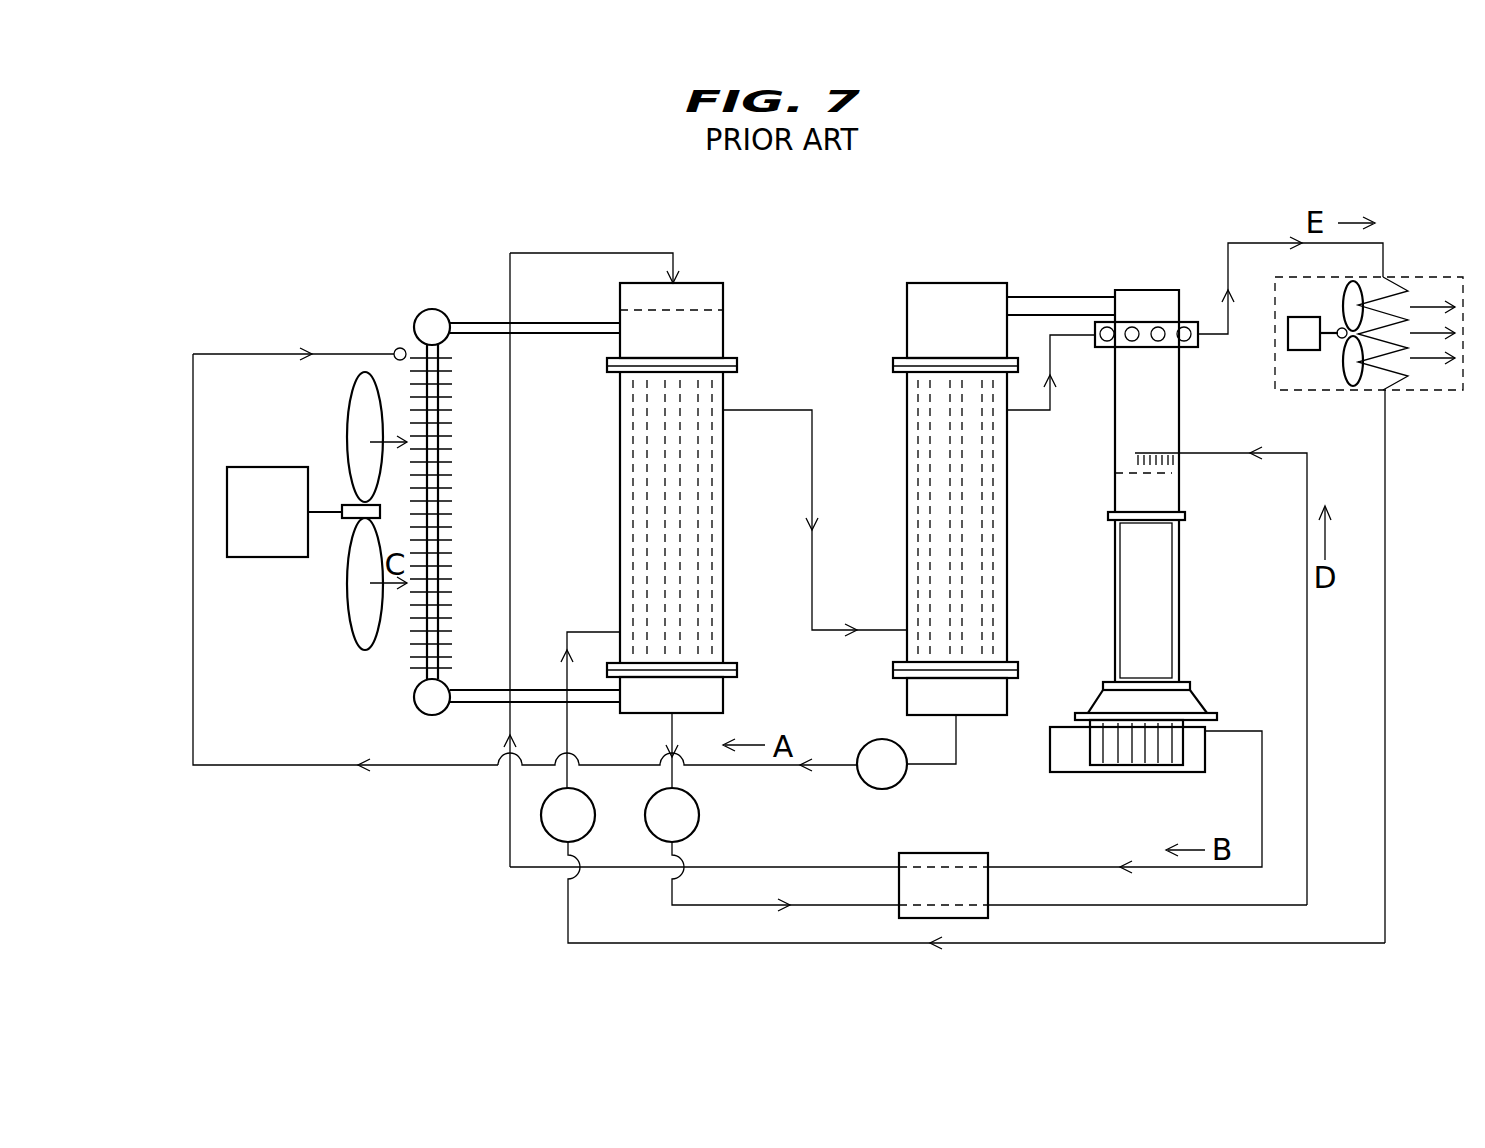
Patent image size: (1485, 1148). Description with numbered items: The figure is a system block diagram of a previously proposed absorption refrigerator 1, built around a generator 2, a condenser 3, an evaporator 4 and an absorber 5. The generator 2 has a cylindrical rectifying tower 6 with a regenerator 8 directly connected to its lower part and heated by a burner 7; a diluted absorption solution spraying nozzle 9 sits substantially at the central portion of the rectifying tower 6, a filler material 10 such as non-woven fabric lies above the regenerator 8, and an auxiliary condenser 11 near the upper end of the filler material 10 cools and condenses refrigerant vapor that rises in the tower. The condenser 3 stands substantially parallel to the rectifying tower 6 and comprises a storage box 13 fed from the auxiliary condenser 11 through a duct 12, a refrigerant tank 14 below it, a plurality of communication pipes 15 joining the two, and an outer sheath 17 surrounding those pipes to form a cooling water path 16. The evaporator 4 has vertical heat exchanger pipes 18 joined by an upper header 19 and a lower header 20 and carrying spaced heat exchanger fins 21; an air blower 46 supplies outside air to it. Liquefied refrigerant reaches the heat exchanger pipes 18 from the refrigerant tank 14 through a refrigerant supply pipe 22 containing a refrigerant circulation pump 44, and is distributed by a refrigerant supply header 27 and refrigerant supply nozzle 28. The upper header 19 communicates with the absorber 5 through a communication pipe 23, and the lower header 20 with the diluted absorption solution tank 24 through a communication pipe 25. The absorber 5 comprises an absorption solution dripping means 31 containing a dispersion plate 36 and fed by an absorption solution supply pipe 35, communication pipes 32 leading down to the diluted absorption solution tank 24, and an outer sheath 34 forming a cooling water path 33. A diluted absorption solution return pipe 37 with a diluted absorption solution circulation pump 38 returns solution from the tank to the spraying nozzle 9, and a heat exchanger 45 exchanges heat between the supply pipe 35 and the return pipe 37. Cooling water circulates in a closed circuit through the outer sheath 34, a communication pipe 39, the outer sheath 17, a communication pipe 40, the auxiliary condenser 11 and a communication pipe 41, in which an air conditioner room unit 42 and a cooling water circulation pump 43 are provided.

The absorption refrigerator 1 is at (1078, 283).
The generator 2 is at (1178, 676).
The condenser 3 is at (953, 459).
The evaporator 4 is at (441, 311).
The absorber 5 is at (670, 439).
The rectifying tower 6 is at (1180, 418).
The burner 7 is at (1075, 772).
The regenerator 8 is at (1165, 765).
The diluted absorption solution spraying nozzle 9 is at (1147, 402).
The filler material 10 is at (1160, 610).
The auxiliary condenser 11 is at (1200, 348).
The duct 12 is at (1042, 297).
The storage box 13 is at (968, 283).
The refrigerant tank 14 is at (893, 697).
The communication pipes 15 is at (918, 410).
The cooling water path 16 is at (997, 482).
The outer sheath 17 is at (1007, 510).
The heat exchanger pipes 18 is at (425, 670).
The upper header 19 is at (428, 310).
The lower header 20 is at (414, 706).
The heat exchanger fins 21 is at (450, 447).
The refrigerant supply pipe 22 is at (290, 766).
The communication pipe 23 is at (545, 322).
The diluted absorption solution tank 24 is at (723, 697).
The communication pipe 25 is at (538, 688).
The refrigerant supply header 27 is at (394, 351).
The refrigerant supply nozzle 28 is at (418, 349).
The absorption solution dripping means 31 is at (702, 283).
The communication pipes 32 is at (633, 535).
The cooling water path 33 is at (717, 537).
The outer sheath 34 is at (725, 573).
The absorption solution supply pipe 35 is at (815, 867).
The dispersion plate 36 is at (725, 287).
The diluted absorption solution return pipe 37 is at (1060, 905).
The diluted absorption solution circulation pump 38 is at (695, 802).
The communication pipe 39 is at (785, 410).
The communication pipe 40 is at (1050, 410).
The communication pipe 41 is at (1385, 480).
The air conditioner room unit 42 is at (1433, 277).
The cooling water circulation pump 43 is at (592, 800).
The refrigerant circulation pump 44 is at (895, 789).
The heat exchanger 45 is at (975, 853).
The air blower 46 is at (348, 632).